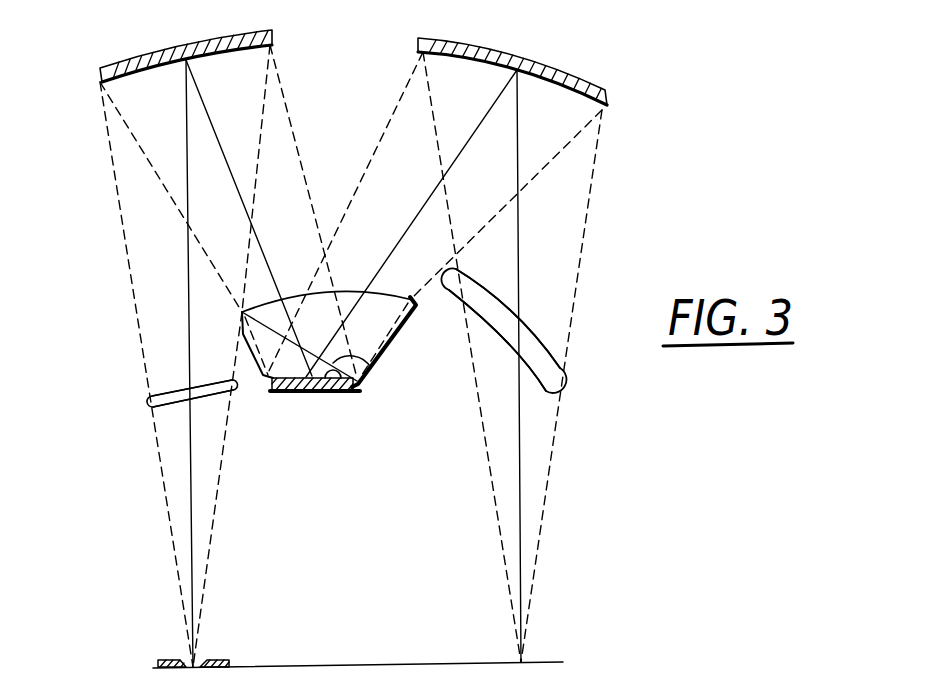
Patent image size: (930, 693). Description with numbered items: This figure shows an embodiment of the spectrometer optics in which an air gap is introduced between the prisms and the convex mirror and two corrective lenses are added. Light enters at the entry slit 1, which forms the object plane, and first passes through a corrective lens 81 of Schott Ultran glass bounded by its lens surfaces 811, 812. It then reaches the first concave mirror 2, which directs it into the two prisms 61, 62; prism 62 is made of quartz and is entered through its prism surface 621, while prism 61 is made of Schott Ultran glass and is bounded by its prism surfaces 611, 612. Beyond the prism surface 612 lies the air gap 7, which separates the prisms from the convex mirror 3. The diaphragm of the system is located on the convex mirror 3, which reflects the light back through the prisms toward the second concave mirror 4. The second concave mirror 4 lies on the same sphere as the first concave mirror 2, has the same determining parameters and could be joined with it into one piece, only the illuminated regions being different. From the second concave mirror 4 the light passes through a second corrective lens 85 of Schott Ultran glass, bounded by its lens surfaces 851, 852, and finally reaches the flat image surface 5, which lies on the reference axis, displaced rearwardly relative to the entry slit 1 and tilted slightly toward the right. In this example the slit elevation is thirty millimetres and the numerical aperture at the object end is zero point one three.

The entry slit 1 is at (221, 660).
The first concave mirror 2 is at (112, 63).
The convex mirror 3 is at (313, 393).
The second concave mirror 4 is at (567, 75).
The image surface 5 is at (430, 663).
The air gap 7 is at (286, 393).
The prism 61 is at (262, 362).
The prism 62 is at (398, 334).
The prism surface 611 is at (381, 370).
The prism surface 612 is at (342, 393).
The prism surface 621 is at (386, 294).
The corrective lens 81 is at (157, 411).
The lens surface 811 is at (177, 407).
The lens surface 812 is at (166, 392).
The corrective lens 85 is at (557, 380).
The lens surface 851 is at (525, 325).
The lens surface 852 is at (538, 380).